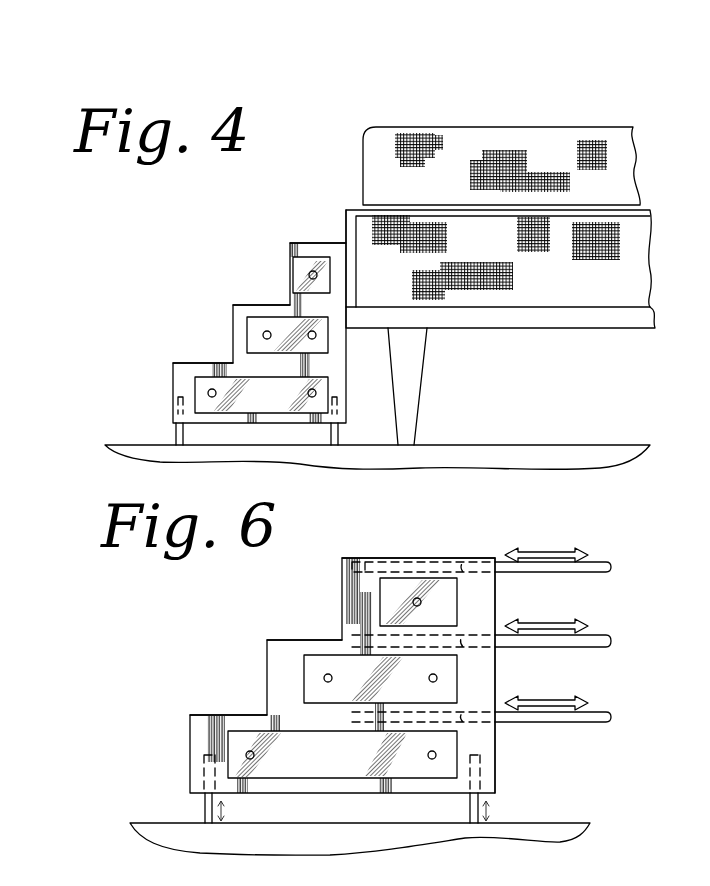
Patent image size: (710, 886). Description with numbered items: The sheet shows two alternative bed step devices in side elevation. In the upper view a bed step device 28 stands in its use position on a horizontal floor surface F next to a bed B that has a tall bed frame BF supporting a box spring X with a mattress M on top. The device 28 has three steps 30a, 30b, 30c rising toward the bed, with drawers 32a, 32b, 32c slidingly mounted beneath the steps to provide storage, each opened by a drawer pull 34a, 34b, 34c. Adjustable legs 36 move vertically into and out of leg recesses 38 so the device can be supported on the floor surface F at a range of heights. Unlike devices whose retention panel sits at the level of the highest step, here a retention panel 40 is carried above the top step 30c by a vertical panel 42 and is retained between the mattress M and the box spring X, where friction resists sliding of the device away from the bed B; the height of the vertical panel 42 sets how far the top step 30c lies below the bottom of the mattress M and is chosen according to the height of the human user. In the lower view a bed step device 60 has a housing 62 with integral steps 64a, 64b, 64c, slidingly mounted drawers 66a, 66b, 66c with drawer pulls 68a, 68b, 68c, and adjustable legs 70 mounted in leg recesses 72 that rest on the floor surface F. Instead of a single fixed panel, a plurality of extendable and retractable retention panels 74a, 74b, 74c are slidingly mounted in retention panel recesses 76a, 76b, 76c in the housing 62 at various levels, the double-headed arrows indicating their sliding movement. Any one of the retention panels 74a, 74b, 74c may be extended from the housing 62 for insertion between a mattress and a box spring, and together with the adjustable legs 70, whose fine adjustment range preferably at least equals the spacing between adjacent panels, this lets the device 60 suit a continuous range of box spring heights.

In FIG. 4, the bed step device 28 is at (230, 290).
In FIG. 4, the step 30a is at (211, 366).
In FIG. 4, the step 30b is at (271, 304).
In FIG. 4, the top step 30c is at (317, 247).
In FIG. 4, the drawer 32a is at (284, 404).
In FIG. 4, the drawer 32b is at (320, 345).
In FIG. 4, the drawer 32c is at (322, 285).
In FIG. 4, the drawer pull 34a is at (312, 397).
In FIG. 4, the drawer pull 34b is at (312, 333).
In FIG. 4, the drawer pull 34c is at (303, 262).
In FIG. 4, the adjustable legs 36 is at (165, 436).
In FIG. 4, the leg recesses 38 is at (176, 408).
In FIG. 4, the retention panel 40 is at (368, 204).
In FIG. 4, the vertical panel 42 is at (346, 216).
In FIG. 4, the bed B is at (505, 115).
In FIG. 4, the mattress M is at (572, 158).
In FIG. 4, the box spring X is at (579, 300).
In FIG. 4, the bed frame BF is at (407, 342).
In FIG. 4, the floor surface F is at (553, 446).
In FIG. 6, the floor surface F is at (592, 826).
In FIG. 6, the bed step device 60 is at (234, 621).
In FIG. 6, the housing 62 is at (485, 745).
In FIG. 6, the step 64a is at (250, 714).
In FIG. 6, the step 64b is at (310, 640).
In FIG. 6, the step 64c is at (382, 558).
In FIG. 6, the drawer 66a is at (336, 758).
In FIG. 6, the drawer 66b is at (426, 694).
In FIG. 6, the drawer 66c is at (443, 610).
In FIG. 6, the drawer pull 68a is at (430, 759).
In FIG. 6, the drawer pull 68b is at (429, 676).
In FIG. 6, the drawer pull 68c is at (421, 600).
In FIG. 6, the adjustable legs 70 is at (205, 810).
In FIG. 6, the leg recesses 72 is at (202, 770).
In FIG. 6, the retention panel 74a is at (603, 722).
In FIG. 6, the retention panel 74b is at (611, 640).
In FIG. 6, the retention panel 74c is at (606, 562).
In FIG. 6, the retention panel recess 76a is at (470, 714).
In FIG. 6, the retention panel recess 76b is at (496, 650).
In FIG. 6, the retention panel recess 76c is at (433, 565).